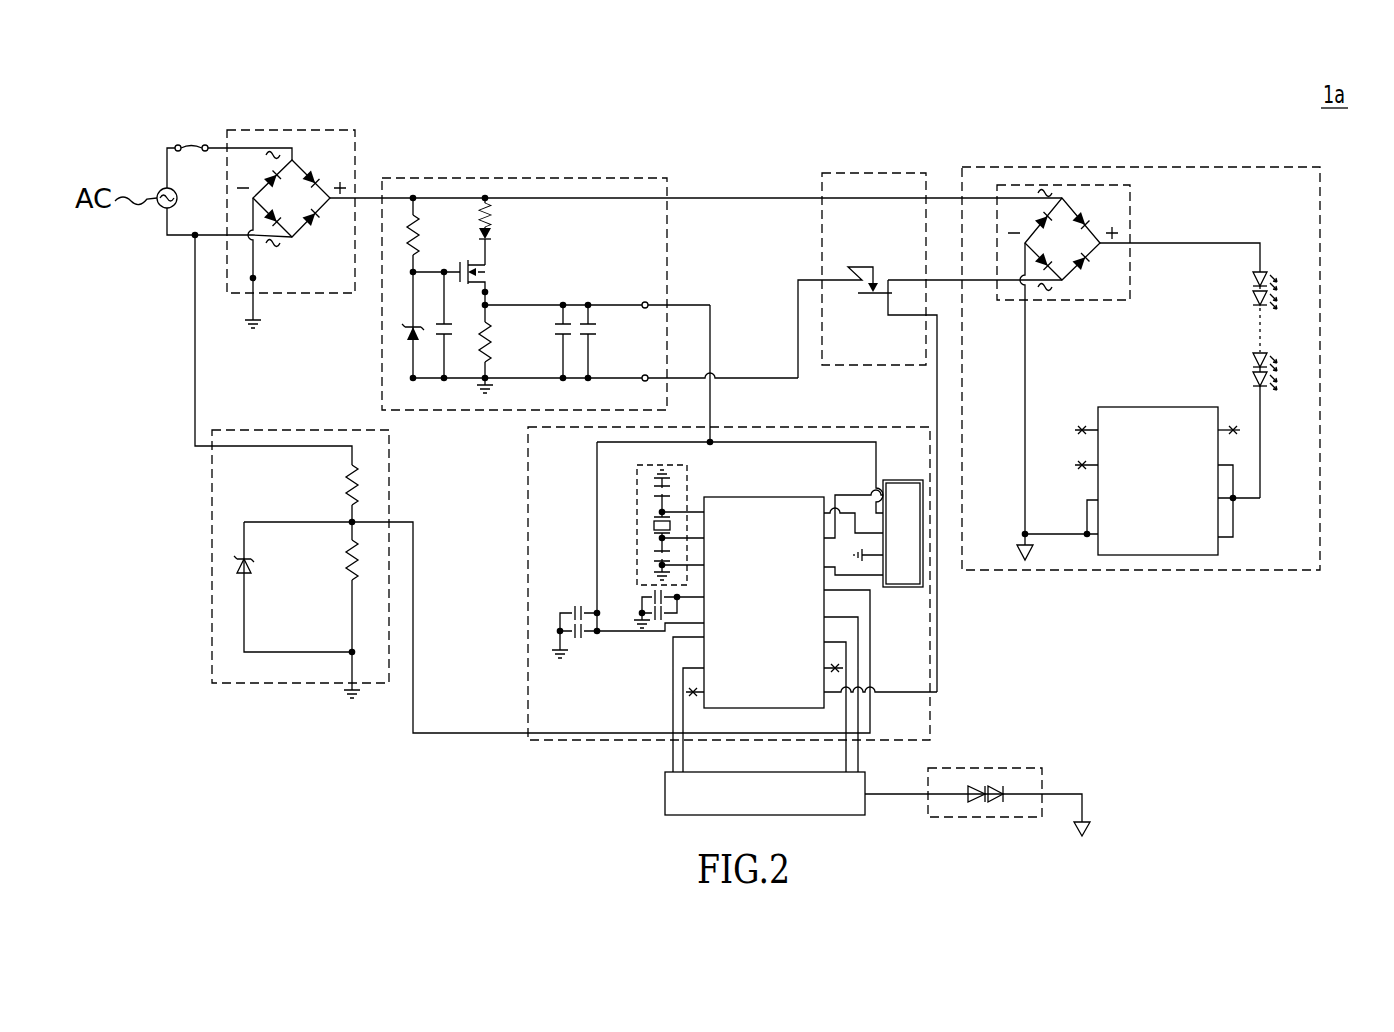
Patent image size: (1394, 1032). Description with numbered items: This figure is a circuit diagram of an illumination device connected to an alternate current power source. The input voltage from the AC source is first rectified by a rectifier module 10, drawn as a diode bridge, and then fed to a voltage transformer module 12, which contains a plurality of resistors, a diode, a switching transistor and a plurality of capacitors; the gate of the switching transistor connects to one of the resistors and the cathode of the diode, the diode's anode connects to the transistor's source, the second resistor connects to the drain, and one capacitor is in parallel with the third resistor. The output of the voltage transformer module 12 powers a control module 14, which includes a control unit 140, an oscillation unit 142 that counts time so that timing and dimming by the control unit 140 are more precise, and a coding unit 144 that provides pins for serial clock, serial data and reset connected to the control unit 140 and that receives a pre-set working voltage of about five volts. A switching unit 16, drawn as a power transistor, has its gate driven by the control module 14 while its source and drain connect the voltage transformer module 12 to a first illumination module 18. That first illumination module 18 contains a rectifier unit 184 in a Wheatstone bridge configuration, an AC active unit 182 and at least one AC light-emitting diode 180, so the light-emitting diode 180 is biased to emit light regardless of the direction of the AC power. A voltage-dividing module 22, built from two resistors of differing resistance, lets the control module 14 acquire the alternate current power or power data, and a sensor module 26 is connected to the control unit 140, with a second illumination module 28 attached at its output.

The rectifier module 10 is at (289, 130).
The voltage transformer module 12 is at (522, 179).
The control module 14 is at (528, 585).
The switching unit 16 is at (872, 169).
The first illumination module 18 is at (1139, 165).
The voltage-dividing module 22 is at (212, 562).
The sensor module 26 is at (665, 792).
The second illumination module 28 is at (985, 768).
The control unit 140 is at (765, 497).
The oscillation unit 142 is at (637, 525).
The coding unit 144 is at (906, 480).
The AC light-emitting diode 180 is at (1283, 290).
The AC active unit 182 is at (1157, 407).
The rectifier unit 184 is at (1130, 207).